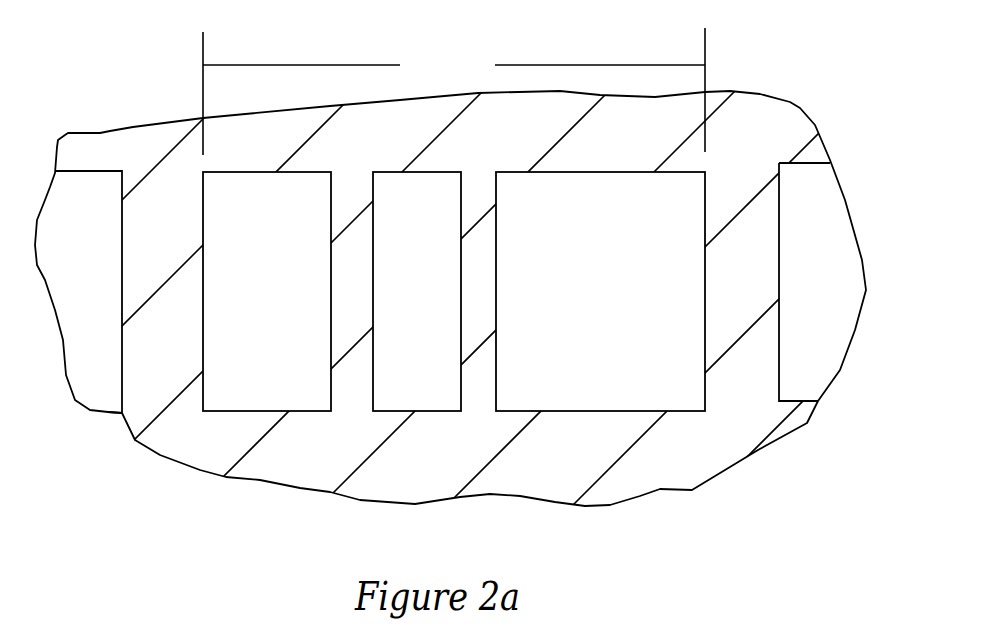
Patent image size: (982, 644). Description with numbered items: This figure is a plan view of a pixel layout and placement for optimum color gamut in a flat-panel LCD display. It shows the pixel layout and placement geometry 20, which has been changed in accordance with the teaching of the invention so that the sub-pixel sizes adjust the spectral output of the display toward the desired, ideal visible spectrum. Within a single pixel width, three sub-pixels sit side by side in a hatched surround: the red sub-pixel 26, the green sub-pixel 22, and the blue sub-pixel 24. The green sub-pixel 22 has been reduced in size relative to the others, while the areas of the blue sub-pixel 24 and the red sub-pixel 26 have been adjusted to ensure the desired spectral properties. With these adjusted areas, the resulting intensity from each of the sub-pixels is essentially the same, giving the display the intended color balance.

The pixel layout and placement geometry 20 is at (480, 143).
The green sub-pixel 22 is at (434, 307).
The blue sub-pixel 24 is at (622, 307).
The red sub-pixel 26 is at (286, 307).